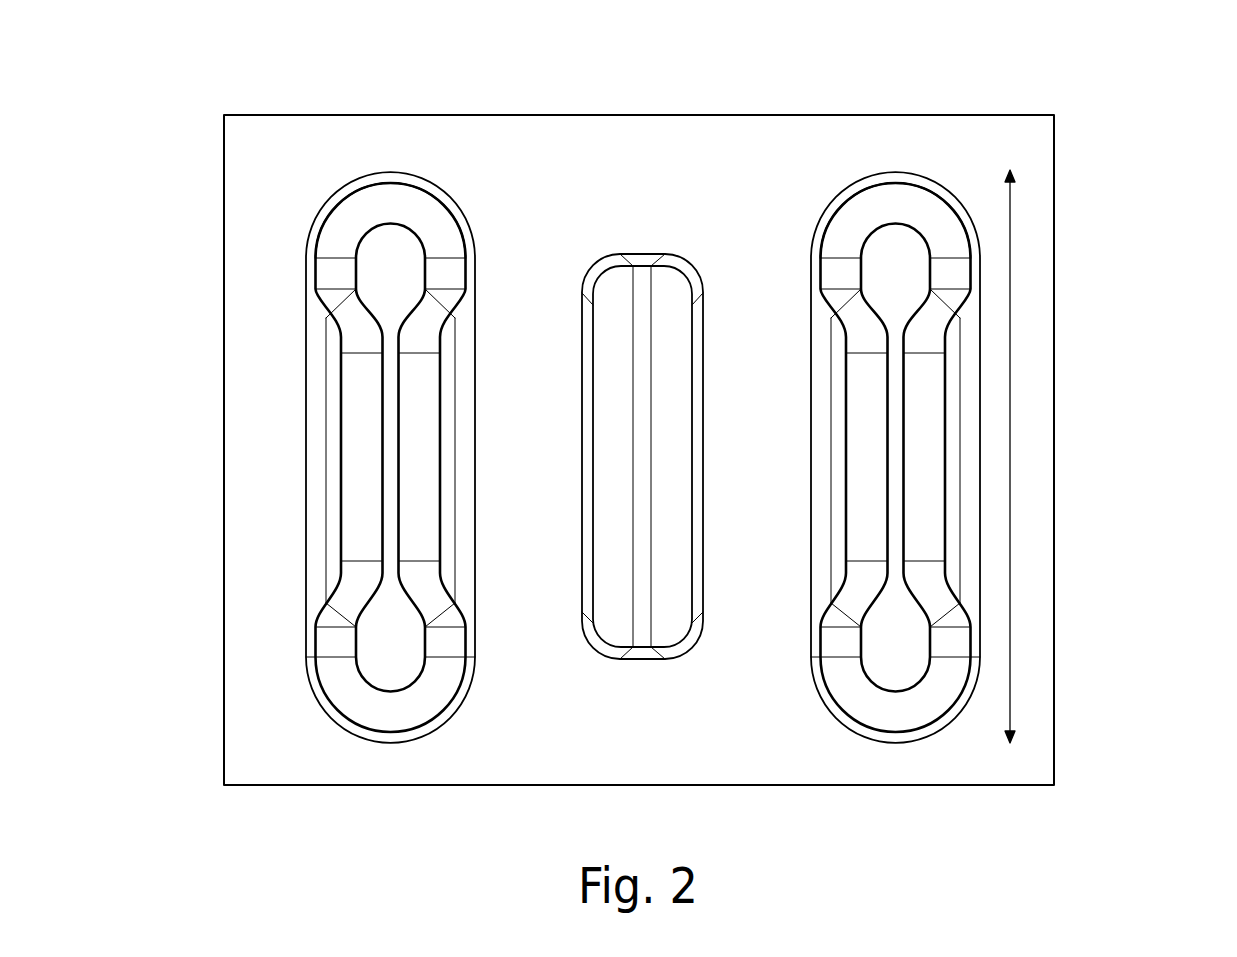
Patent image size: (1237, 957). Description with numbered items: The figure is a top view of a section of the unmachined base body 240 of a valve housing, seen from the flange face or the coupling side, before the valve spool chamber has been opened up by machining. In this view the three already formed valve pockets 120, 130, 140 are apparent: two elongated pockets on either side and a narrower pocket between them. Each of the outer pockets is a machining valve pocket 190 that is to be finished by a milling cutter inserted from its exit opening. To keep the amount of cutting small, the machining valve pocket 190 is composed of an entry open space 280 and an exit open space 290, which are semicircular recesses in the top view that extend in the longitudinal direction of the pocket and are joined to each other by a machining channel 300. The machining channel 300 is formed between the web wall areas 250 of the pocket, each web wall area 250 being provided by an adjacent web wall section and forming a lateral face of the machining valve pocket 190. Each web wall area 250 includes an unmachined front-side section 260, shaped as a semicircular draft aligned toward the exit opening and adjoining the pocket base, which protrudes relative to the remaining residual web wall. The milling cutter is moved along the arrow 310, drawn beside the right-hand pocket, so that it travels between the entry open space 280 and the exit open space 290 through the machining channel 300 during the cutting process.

The valve pocket 120 is at (390, 372).
The valve pocket 130 is at (643, 283).
The valve pocket 140 is at (895, 373).
The machining valve pocket 190 is at (387, 190).
The unmachined base body 240 is at (1108, 134).
The web wall area 250 is at (443, 360).
The unmachined front-side section 260 is at (443, 470).
The entry open space 280 is at (343, 227).
The exit open space 290 is at (355, 672).
The machining channel 300 is at (390, 527).
The arrow 310 is at (1013, 580).